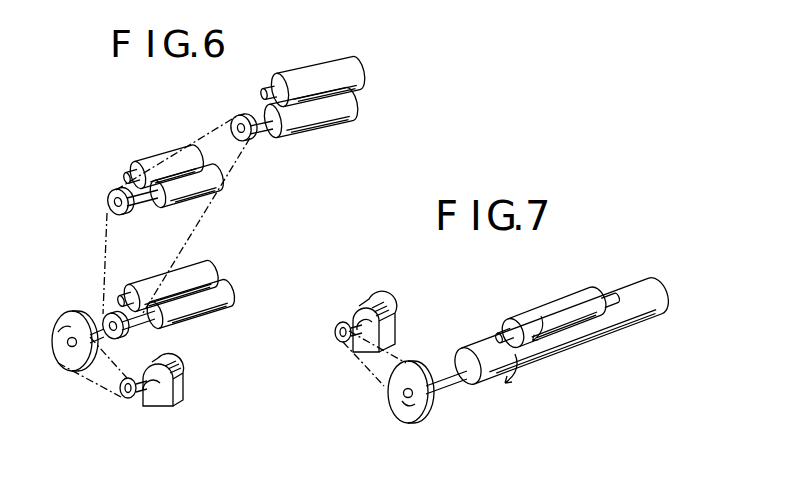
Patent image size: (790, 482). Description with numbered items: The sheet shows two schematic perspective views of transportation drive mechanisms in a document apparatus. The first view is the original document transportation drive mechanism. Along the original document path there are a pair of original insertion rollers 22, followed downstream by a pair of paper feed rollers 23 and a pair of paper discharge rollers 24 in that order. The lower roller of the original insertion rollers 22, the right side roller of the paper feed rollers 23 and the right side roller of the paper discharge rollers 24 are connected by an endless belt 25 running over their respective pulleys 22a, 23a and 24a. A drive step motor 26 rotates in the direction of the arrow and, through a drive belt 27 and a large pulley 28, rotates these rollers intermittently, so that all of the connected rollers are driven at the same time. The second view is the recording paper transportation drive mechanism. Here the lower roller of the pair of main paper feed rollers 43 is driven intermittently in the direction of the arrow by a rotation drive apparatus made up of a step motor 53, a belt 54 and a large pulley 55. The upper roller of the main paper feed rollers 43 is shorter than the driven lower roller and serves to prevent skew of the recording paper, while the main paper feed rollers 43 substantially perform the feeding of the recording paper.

In FIG. 6, the original insertion rollers 22 is at (366, 101).
In FIG. 6, the pulley 22a is at (236, 117).
In FIG. 6, the paper feed rollers 23 is at (213, 177).
In FIG. 6, the pulley 23a is at (109, 196).
In FIG. 6, the paper discharge rollers 24 is at (223, 285).
In FIG. 6, the pulley 24a is at (107, 315).
In FIG. 6, the endless belt 25 is at (104, 256).
In FIG. 6, the drive step motor 26 is at (185, 386).
In FIG. 6, the drive belt 27 is at (127, 400).
In FIG. 6, the large pulley 28 is at (70, 362).
In FIG. 7, the main paper feed rollers 43 is at (556, 300).
In FIG. 7, the step motor 53 is at (388, 303).
In FIG. 7, the belt 54 is at (380, 392).
In FIG. 7, the large pulley 55 is at (418, 418).